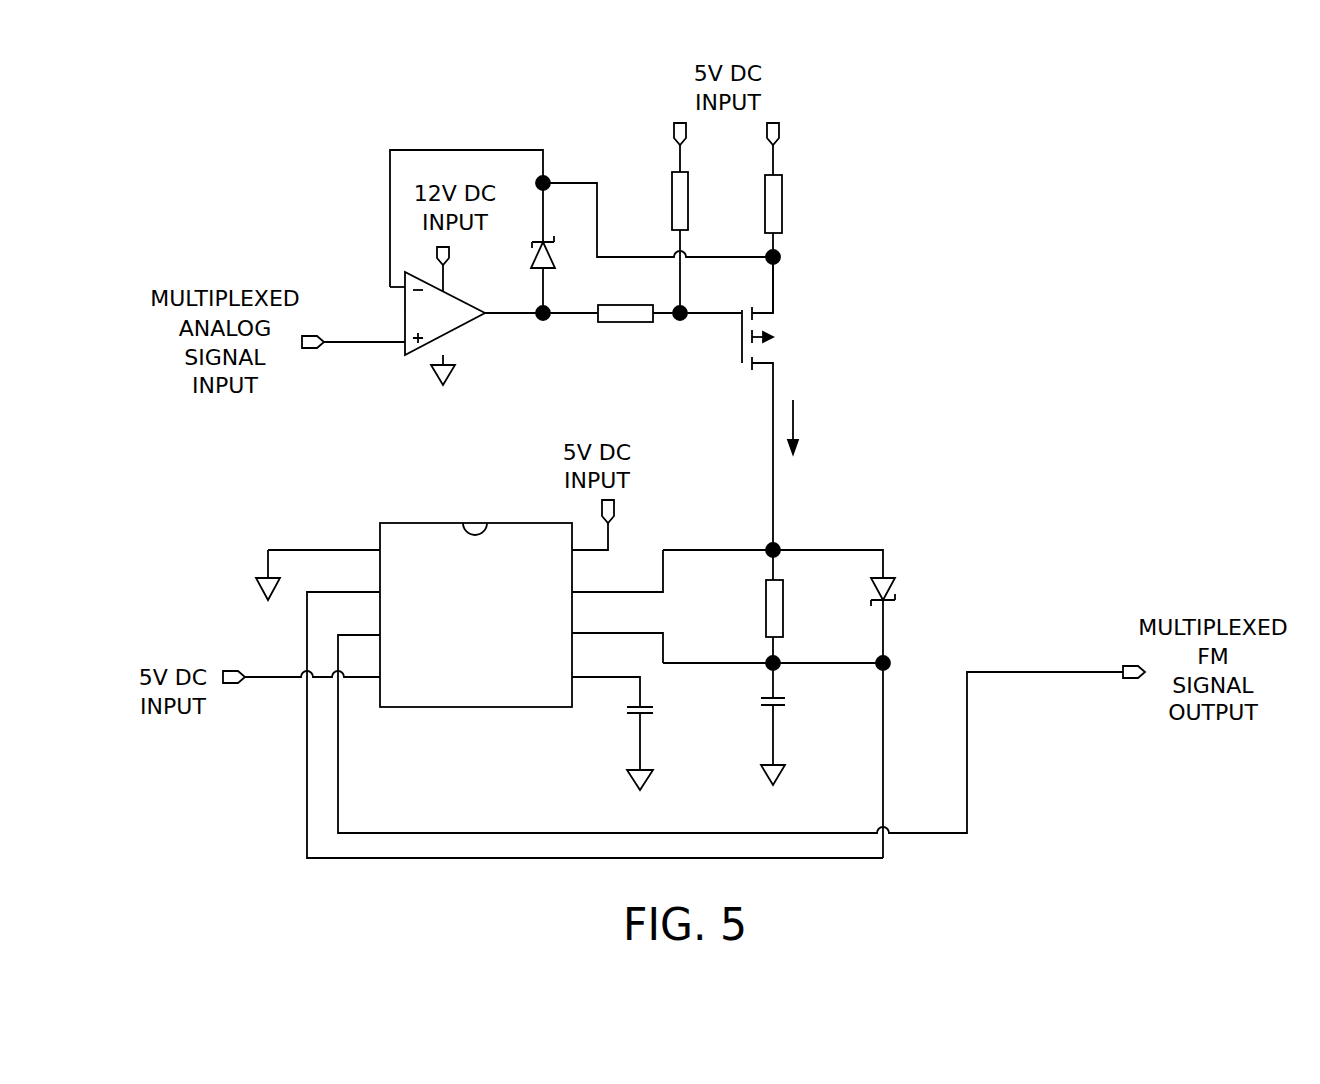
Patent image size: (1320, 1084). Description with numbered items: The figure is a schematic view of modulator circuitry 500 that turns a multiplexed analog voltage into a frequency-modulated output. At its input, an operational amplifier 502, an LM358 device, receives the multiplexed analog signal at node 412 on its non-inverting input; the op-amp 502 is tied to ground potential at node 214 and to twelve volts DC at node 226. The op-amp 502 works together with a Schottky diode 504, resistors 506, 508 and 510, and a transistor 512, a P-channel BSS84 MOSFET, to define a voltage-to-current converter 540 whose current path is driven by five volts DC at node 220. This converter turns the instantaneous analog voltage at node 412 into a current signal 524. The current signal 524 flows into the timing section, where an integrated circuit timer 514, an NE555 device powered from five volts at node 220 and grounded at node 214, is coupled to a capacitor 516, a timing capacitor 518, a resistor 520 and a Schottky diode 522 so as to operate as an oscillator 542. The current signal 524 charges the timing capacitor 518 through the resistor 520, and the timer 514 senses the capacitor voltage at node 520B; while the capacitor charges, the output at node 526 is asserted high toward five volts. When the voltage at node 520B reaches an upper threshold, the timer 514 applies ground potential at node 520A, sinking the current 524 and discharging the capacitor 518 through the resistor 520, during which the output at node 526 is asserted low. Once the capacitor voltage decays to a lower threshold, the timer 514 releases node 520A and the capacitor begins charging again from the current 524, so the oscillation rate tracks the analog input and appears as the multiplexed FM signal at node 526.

The modulator circuitry 500 is at (1030, 110).
The voltage-to-current converter 540 is at (528, 112).
The oscillator 542 is at (528, 486).
The node 226 is at (452, 253).
The node 220 is at (673, 127).
The node 214 is at (432, 378).
The node 412 is at (310, 349).
The operational amplifier 502 is at (475, 323).
The Schottky diode 504 is at (558, 255).
The resistor 506 is at (668, 215).
The resistor 508 is at (783, 197).
The resistor 510 is at (610, 323).
The transistor 512 is at (777, 322).
The integrated circuit timer 514 is at (684, 690).
The capacitor 516 is at (647, 713).
The timing capacitor 518 is at (782, 710).
The resistor 520 is at (783, 588).
The node 520A is at (770, 558).
The node 520B is at (768, 653).
The Schottky diode 522 is at (893, 590).
The current signal 524 is at (793, 425).
The node 526 is at (1132, 679).